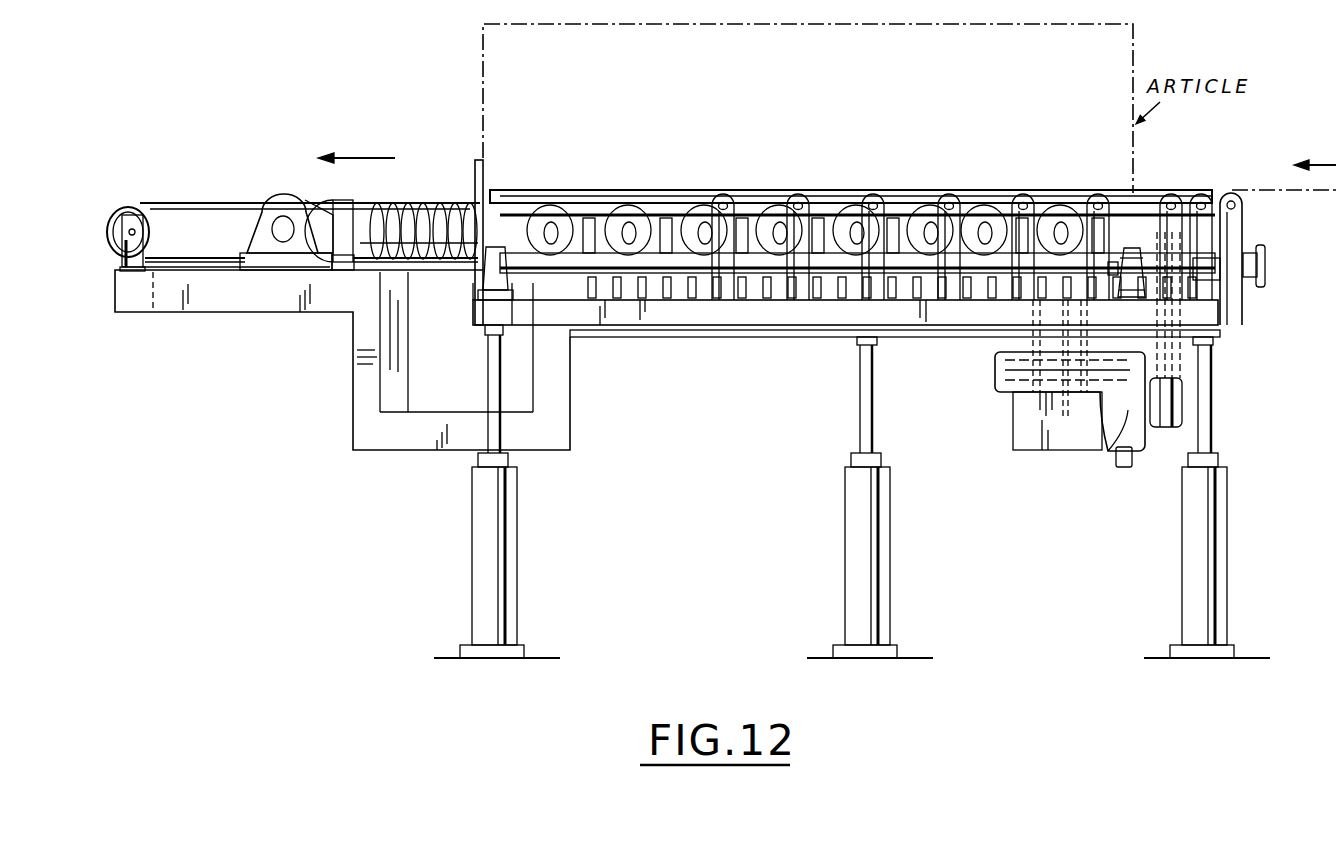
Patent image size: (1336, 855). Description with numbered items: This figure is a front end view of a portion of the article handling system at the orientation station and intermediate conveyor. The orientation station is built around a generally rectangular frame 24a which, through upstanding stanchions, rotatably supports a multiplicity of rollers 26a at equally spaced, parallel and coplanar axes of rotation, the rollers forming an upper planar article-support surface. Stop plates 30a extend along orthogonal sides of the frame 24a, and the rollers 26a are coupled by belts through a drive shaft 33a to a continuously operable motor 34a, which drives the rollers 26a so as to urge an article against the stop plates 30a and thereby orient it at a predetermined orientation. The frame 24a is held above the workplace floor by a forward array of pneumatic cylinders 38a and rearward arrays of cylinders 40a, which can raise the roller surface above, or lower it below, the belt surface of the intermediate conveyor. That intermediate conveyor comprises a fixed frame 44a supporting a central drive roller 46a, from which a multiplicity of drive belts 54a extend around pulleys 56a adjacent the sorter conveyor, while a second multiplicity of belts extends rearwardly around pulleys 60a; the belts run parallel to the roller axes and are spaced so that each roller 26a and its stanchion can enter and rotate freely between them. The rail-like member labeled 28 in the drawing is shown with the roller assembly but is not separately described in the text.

The frame 24a is at (705, 313).
The rollers 26a is at (764, 202).
The conveyor rail 28 is at (880, 198).
The stop plates 30a is at (485, 174).
The drive shaft 33a is at (902, 312).
The motor 34a is at (1140, 467).
The pneumatic cylinders 38a is at (500, 577).
The cylinders 40a is at (870, 587).
The fixed frame 44a is at (263, 302).
The central drive roller 46a is at (357, 225).
The drive belts 54a is at (247, 200).
The pulleys 56a is at (128, 214).
The pulleys 60a is at (556, 213).